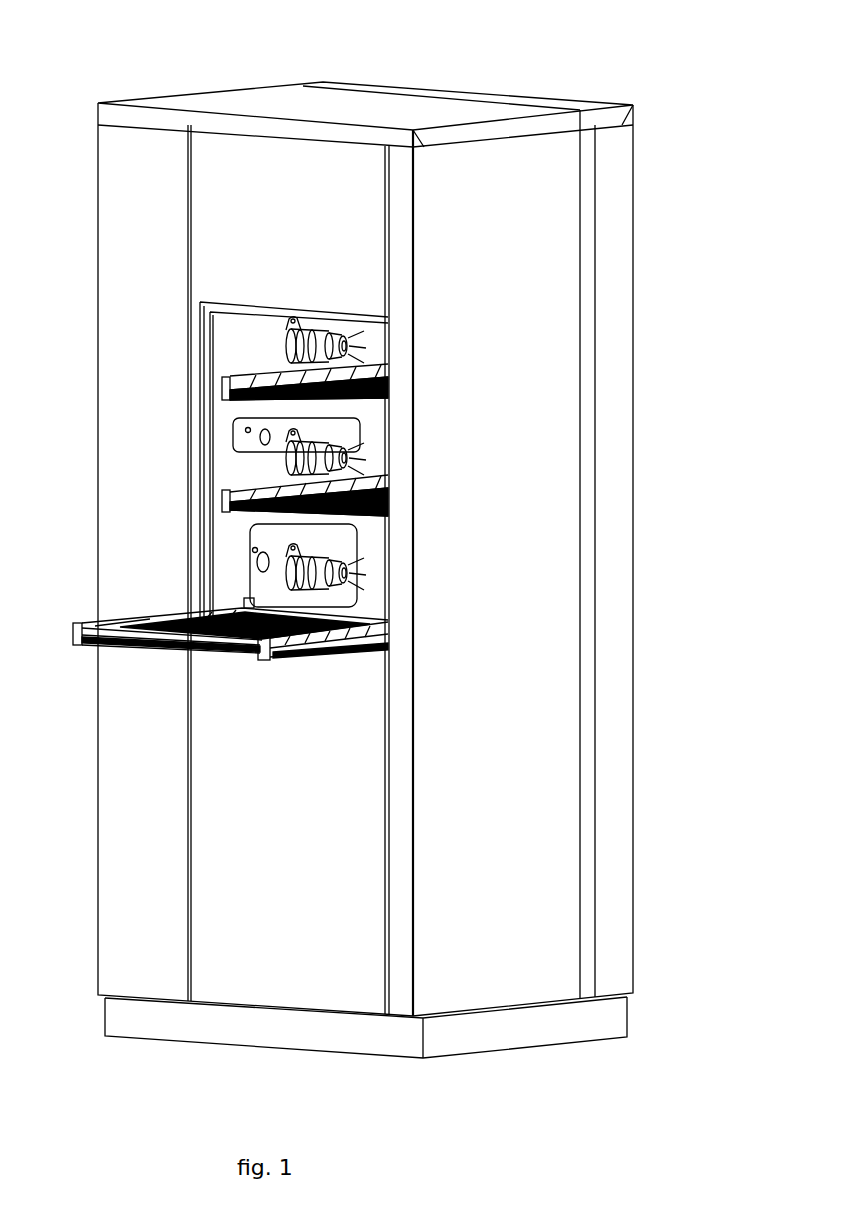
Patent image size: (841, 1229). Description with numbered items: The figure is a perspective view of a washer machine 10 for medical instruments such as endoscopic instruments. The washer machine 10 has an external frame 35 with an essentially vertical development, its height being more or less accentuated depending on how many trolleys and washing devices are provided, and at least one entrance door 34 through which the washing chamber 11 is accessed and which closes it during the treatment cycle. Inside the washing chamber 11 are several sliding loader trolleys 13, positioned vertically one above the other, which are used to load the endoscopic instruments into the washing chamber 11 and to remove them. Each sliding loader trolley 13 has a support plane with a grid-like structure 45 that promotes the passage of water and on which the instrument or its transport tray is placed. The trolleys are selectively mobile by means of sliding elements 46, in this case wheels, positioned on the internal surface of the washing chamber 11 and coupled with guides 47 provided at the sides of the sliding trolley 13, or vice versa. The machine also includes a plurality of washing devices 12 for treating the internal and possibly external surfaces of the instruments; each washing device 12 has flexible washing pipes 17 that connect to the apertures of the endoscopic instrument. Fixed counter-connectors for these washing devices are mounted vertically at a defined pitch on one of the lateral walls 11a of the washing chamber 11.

The washer machine 10 is at (684, 62).
The external frame 35 is at (126, 196).
The entrance door 34 is at (358, 243).
The washing chamber 11 is at (232, 334).
The lateral wall 11a is at (256, 341).
The washing device 12 is at (262, 427).
The flexible washing pipe 17 is at (365, 351).
The sliding loader trolley 13 is at (395, 388).
The grid-like structure 45 is at (225, 648).
The sliding element 46 is at (248, 600).
The guide 47 is at (73, 641).